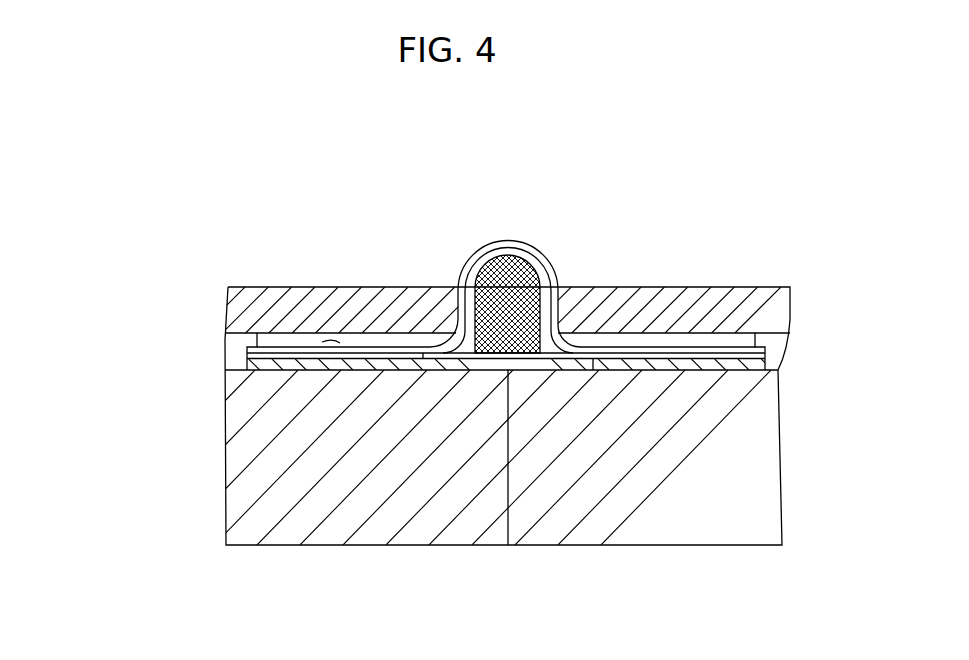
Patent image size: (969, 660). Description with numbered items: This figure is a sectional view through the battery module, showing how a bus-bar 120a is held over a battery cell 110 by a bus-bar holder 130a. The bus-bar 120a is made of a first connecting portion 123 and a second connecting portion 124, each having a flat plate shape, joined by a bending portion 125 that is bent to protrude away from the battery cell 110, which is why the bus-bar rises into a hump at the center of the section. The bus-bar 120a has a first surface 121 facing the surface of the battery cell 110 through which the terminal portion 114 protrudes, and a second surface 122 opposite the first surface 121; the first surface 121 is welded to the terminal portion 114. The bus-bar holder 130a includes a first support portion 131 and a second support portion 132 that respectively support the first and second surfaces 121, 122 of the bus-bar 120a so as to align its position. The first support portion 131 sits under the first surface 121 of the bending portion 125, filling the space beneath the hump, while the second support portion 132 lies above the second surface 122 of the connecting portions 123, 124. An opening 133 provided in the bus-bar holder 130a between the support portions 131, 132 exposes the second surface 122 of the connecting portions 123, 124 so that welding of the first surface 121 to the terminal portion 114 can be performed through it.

The battery cell 110 is at (265, 442).
The terminal portion 114 is at (265, 364).
The bus-bar 120a is at (352, 190).
The first surface 121 is at (304, 360).
The second surface 122 is at (276, 341).
The first connecting portion 123 is at (387, 346).
The second connecting portion 124 is at (598, 340).
The bending portion 125 is at (469, 249).
The bus-bar holder 130a is at (293, 283).
The first support portion 131 is at (522, 355).
The second support portion 132 is at (753, 334).
The opening 133 is at (340, 343).